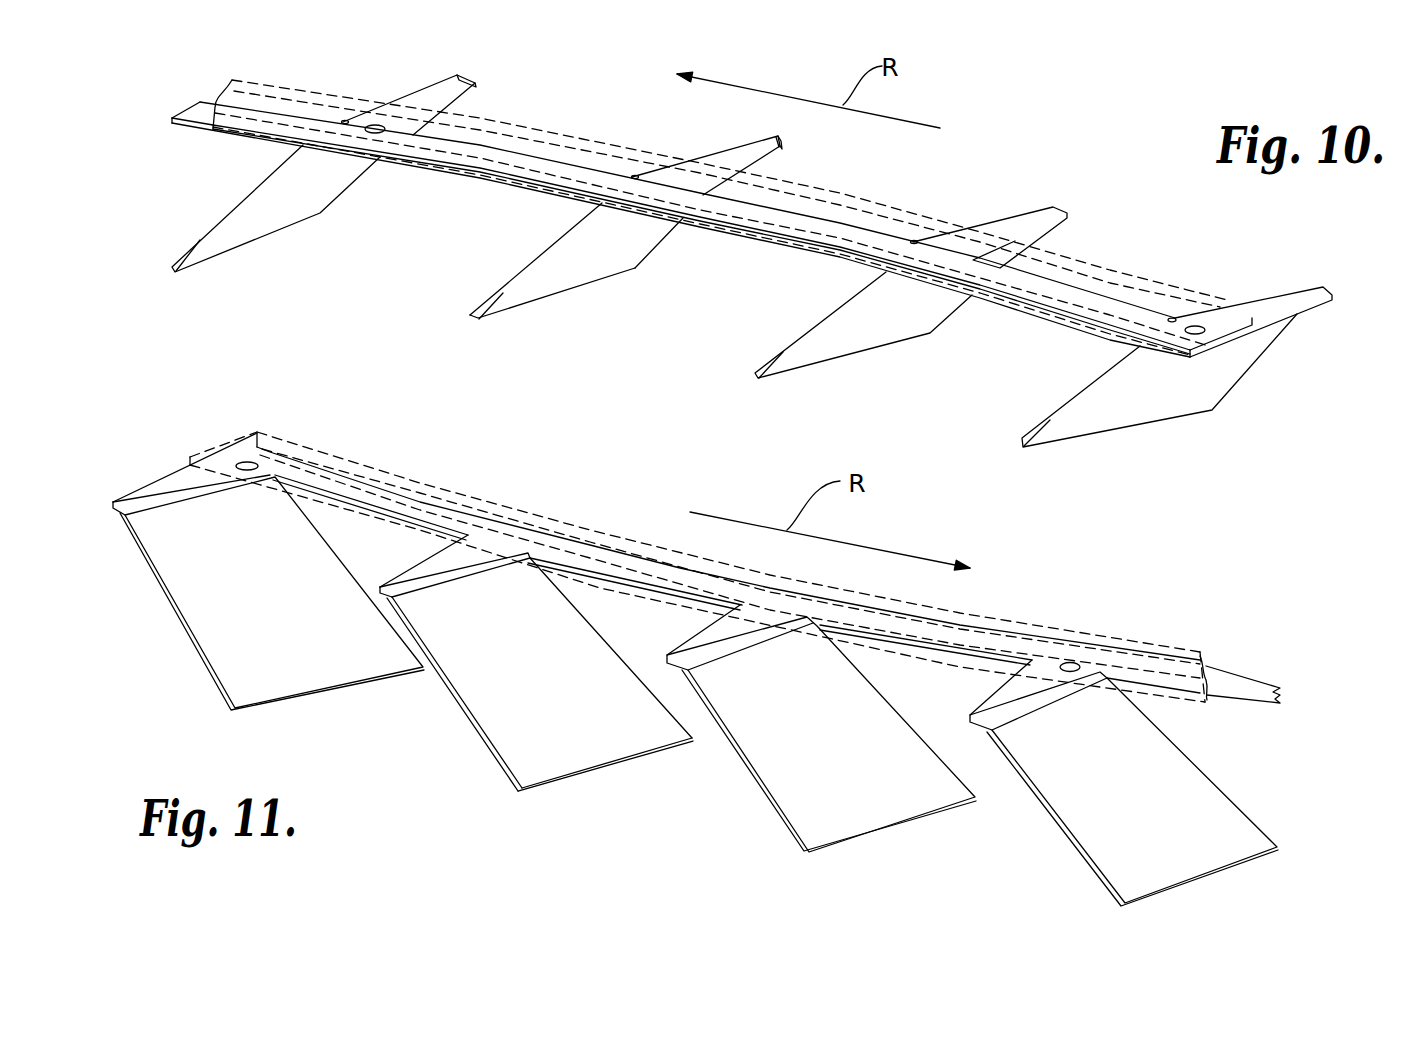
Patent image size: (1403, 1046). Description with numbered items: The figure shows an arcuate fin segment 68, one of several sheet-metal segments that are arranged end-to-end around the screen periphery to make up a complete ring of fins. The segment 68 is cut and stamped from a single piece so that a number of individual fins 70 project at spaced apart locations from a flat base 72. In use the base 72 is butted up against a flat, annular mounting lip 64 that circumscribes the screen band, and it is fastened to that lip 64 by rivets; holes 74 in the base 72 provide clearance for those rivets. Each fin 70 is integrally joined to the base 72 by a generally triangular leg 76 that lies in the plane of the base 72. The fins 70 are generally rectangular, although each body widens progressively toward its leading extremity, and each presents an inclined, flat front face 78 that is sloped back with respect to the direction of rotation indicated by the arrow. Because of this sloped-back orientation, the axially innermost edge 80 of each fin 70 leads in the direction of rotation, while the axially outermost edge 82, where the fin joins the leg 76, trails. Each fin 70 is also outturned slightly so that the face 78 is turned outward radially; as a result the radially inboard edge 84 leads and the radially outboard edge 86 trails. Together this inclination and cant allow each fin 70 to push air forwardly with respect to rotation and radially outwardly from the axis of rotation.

In FIG. 10, the mounting lip 64 is at (900, 227).
In FIG. 11, the mounting lip 64 is at (1000, 623).
In FIG. 10, the arcuate fin segment 68 is at (716, 242).
In FIG. 11, the arcuate fin segment 68 is at (734, 649).
In FIG. 10, the fin 70 is at (734, 296).
In FIG. 11, the fin 70 is at (699, 691).
In FIG. 10, the base 72 is at (197, 108).
In FIG. 11, the base 72 is at (1267, 687).
In FIG. 10, the hole 74 is at (376, 127).
In FIG. 11, the hole 74 is at (246, 463).
In FIG. 10, the leg 76 is at (758, 148).
In FIG. 11, the leg 76 is at (431, 570).
In FIG. 11, the front face 78 is at (525, 742).
In FIG. 10, the axially innermost edge 80 is at (527, 303).
In FIG. 11, the axially innermost edge 80 is at (637, 757).
In FIG. 10, the axially outermost edge 82 is at (705, 150).
In FIG. 11, the axially outermost edge 82 is at (453, 578).
In FIG. 10, the radially inboard edge 84 is at (538, 253).
In FIG. 11, the radially inboard edge 84 is at (603, 637).
In FIG. 10, the radially outboard edge 86 is at (667, 240).
In FIG. 11, the radially outboard edge 86 is at (466, 696).